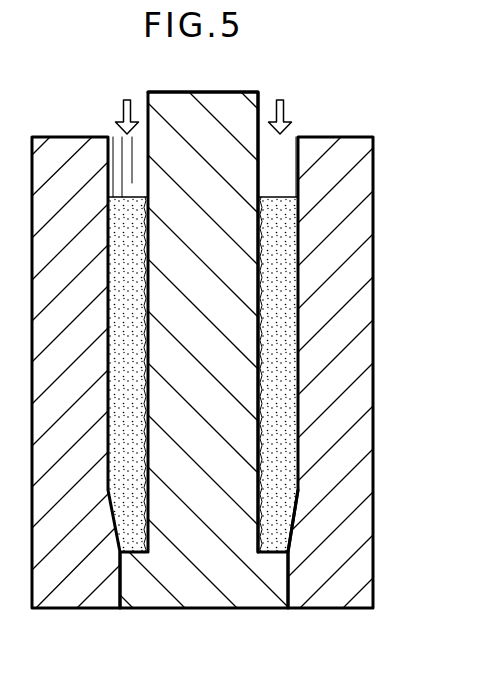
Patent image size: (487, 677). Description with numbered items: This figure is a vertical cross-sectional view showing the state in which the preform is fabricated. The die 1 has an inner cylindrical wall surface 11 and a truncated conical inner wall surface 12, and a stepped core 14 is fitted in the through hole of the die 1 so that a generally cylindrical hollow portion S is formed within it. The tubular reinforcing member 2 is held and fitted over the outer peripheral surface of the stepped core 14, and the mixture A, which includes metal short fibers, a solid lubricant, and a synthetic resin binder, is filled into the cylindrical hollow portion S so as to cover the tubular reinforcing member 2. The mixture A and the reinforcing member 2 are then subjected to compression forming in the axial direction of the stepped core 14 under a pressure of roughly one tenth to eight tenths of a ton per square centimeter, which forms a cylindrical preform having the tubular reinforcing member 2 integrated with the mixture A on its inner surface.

The die 1 is at (244, 379).
The tubular reinforcing member 2 is at (268, 282).
The mixture A is at (296, 343).
The cylindrical hollow portion S is at (287, 152).
The inner cylindrical wall surface 11 is at (296, 385).
The truncated conical inner wall surface 12 is at (291, 530).
The stepped core 14 is at (213, 594).